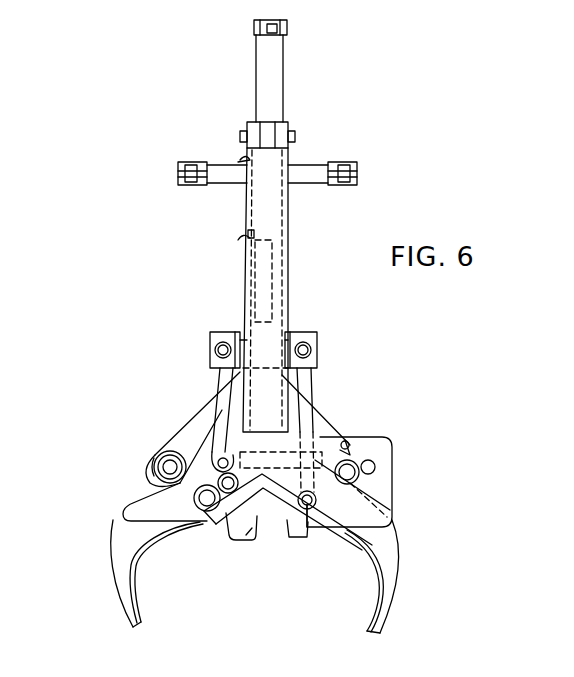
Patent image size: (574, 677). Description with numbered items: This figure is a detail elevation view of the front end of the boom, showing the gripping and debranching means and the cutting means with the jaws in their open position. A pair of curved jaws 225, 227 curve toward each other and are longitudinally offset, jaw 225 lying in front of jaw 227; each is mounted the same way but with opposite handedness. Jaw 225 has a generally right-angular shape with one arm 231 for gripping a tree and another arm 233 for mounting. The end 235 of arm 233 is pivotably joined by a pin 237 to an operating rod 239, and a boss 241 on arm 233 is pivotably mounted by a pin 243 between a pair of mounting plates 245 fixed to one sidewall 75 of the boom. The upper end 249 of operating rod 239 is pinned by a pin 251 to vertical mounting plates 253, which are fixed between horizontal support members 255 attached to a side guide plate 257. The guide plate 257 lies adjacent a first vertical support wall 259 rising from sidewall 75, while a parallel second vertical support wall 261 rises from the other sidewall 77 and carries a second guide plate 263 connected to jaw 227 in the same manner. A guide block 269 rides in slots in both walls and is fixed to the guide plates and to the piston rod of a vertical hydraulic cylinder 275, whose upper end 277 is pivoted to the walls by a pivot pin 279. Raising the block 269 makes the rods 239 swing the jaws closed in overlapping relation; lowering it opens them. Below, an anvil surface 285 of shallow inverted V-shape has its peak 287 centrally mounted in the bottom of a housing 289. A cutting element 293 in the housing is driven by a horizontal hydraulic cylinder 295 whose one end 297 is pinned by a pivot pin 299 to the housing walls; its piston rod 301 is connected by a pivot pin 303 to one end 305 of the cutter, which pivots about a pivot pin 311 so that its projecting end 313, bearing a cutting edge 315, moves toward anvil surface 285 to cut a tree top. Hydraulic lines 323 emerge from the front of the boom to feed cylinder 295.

The sidewall 75 is at (218, 392).
The sidewall 77 is at (300, 402).
The jaw 225 is at (110, 578).
The jaw 227 is at (403, 588).
The arm 231 is at (135, 624).
The arm 233 is at (135, 490).
The end 235 is at (318, 512).
The pin 237 is at (316, 500).
The operating rod 239 is at (312, 388).
The boss 241 is at (162, 440).
The pin 243 is at (153, 462).
The mounting plates 245 is at (198, 412).
The upper end 249 is at (212, 350).
The pin 251 is at (212, 335).
The vertical mounting plates 253 is at (318, 345).
The horizontal support members 255 is at (294, 332).
The side guide plate 257 is at (228, 332).
The vertical support wall 259 is at (245, 214).
The vertical support wall 261 is at (288, 248).
The guide plate 263 is at (306, 349).
The guide block 269 is at (271, 320).
The hydraulic cylinder 275 is at (288, 205).
The upper end 277 is at (262, 148).
The pivot pin 279 is at (241, 135).
The anvil surface 285 is at (330, 529).
The peak 287 is at (288, 512).
The housing 289 is at (395, 492).
The cutting element 293 is at (230, 538).
The hydraulic cylinder 295 is at (333, 433).
The end 297 is at (362, 466).
The pivot pin 299 is at (376, 470).
The piston rod 301 is at (273, 457).
The pivot pin 303 is at (242, 436).
The end 305 is at (197, 447).
The pivot pin 311 is at (195, 499).
The projecting end 313 is at (262, 535).
The cutting edge 315 is at (293, 529).
The hydraulic lines 323 is at (348, 448).